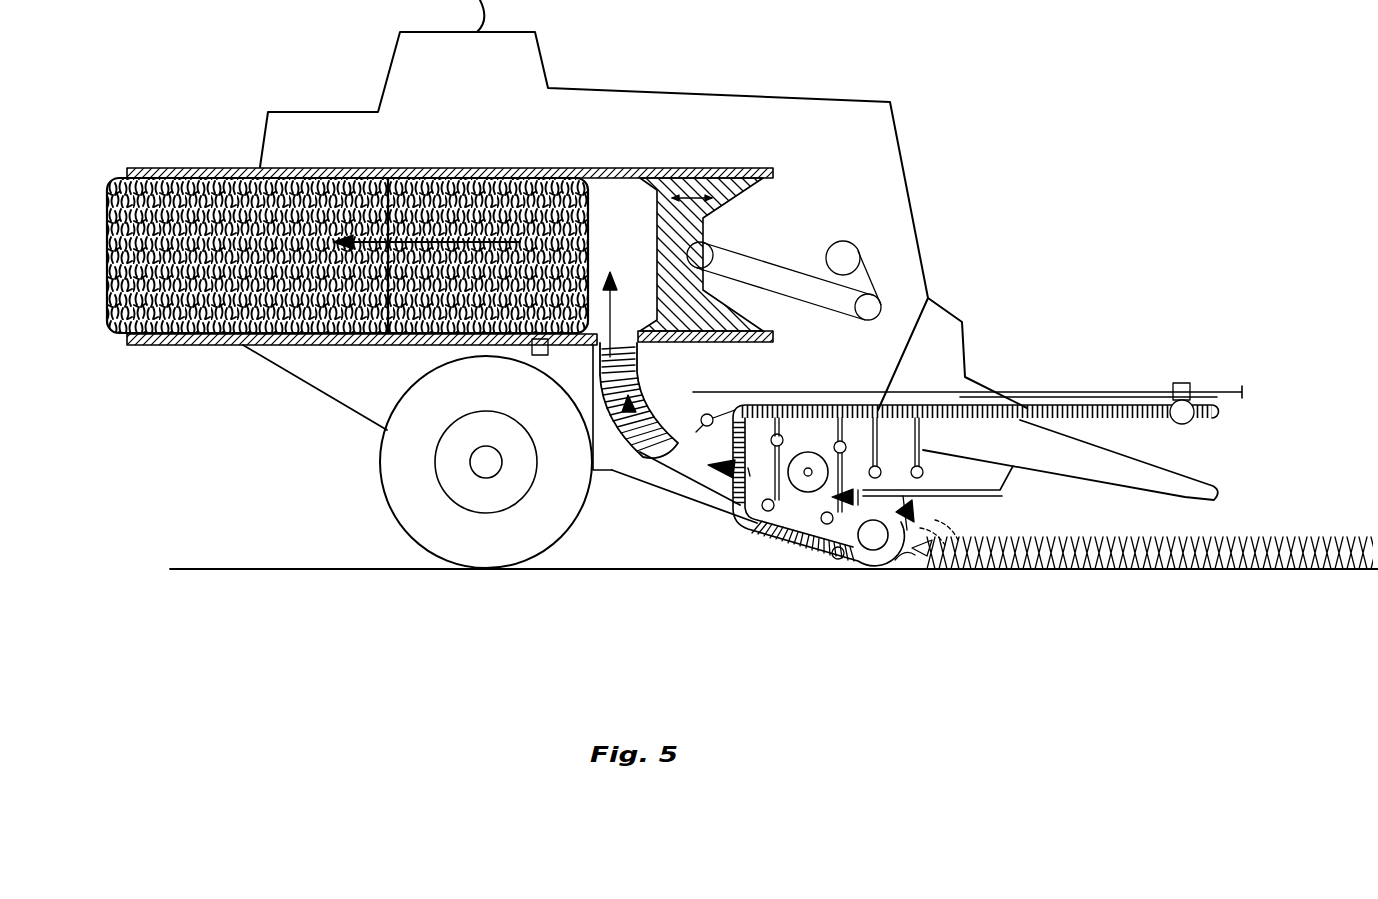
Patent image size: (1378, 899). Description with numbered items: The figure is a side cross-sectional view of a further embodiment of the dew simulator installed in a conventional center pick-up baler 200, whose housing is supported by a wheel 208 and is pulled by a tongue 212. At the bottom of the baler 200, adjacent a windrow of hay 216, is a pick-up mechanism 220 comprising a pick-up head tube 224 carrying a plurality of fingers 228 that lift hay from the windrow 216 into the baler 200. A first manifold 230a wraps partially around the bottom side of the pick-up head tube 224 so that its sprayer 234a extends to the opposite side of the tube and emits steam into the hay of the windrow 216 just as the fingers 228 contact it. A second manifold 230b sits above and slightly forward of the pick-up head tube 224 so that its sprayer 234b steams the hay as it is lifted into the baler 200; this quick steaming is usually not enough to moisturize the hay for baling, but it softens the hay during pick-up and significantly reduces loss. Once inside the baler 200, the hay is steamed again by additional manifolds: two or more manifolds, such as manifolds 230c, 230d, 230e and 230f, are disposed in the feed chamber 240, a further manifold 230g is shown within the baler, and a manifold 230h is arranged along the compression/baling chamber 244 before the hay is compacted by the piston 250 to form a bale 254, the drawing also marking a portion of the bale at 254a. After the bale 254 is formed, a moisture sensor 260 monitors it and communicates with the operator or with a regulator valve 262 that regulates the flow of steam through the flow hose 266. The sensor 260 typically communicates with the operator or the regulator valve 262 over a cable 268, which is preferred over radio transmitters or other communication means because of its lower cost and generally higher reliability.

The center pick-up baler 200 is at (686, 80).
The wheel 208 is at (403, 530).
The tongue 212 is at (1100, 390).
The windrow of hay 216 is at (1305, 537).
The pick-up mechanism 220 is at (875, 506).
The pick-up head tube 224 is at (876, 570).
The fingers 228 is at (943, 602).
The first manifold 230a is at (834, 558).
The second manifold 230b is at (923, 470).
The manifold 230c is at (768, 512).
The manifold 230d is at (790, 547).
The manifold 230e is at (880, 466).
The manifold 230f is at (845, 441).
The manifold 230g is at (800, 452).
The manifold 230h is at (707, 414).
The sprayer 234a is at (915, 560).
The sprayer 234b is at (925, 497).
The feed chamber 240 is at (718, 504).
The compression/baling chamber 244 is at (668, 482).
The piston 250 is at (688, 192).
The bale 254 is at (331, 192).
The bale flake 254a is at (106, 243).
The moisture sensor 260 is at (532, 352).
The regulator valve 262 is at (1178, 383).
The flow hose 266 is at (1222, 413).
The cable 268 is at (598, 445).